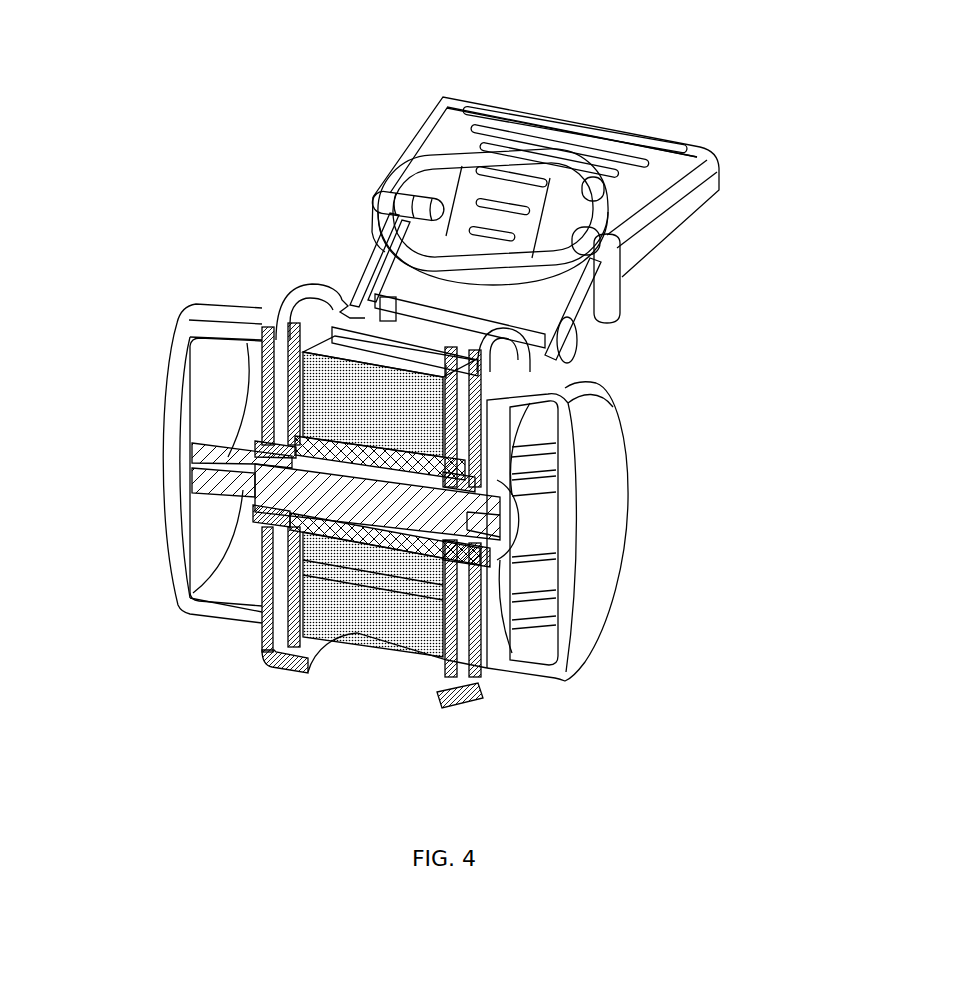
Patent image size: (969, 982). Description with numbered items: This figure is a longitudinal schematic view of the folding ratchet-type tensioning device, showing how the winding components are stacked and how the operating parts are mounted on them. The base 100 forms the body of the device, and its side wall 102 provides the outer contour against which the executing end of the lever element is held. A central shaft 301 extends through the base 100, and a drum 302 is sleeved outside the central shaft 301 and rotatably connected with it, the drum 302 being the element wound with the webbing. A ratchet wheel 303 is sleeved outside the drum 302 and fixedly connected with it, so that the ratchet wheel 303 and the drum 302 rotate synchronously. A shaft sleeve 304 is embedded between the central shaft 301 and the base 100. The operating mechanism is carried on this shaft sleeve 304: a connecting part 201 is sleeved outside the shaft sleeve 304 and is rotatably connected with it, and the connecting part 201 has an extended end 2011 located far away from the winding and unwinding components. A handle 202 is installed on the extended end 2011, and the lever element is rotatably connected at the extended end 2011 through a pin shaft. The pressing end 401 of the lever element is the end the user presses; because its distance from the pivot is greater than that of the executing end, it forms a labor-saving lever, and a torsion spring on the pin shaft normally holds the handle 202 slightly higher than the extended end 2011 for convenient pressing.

The base 100 is at (389, 528).
The side wall 102 is at (158, 505).
The connecting part 201 is at (381, 261).
The extended end 2011 is at (698, 286).
The handle 202 is at (546, 156).
The central shaft 301 is at (387, 626).
The drum 302 is at (371, 623).
The ratchet wheel 303 is at (588, 517).
The shaft sleeve 304 is at (177, 498).
The pressing end 401 is at (429, 141).